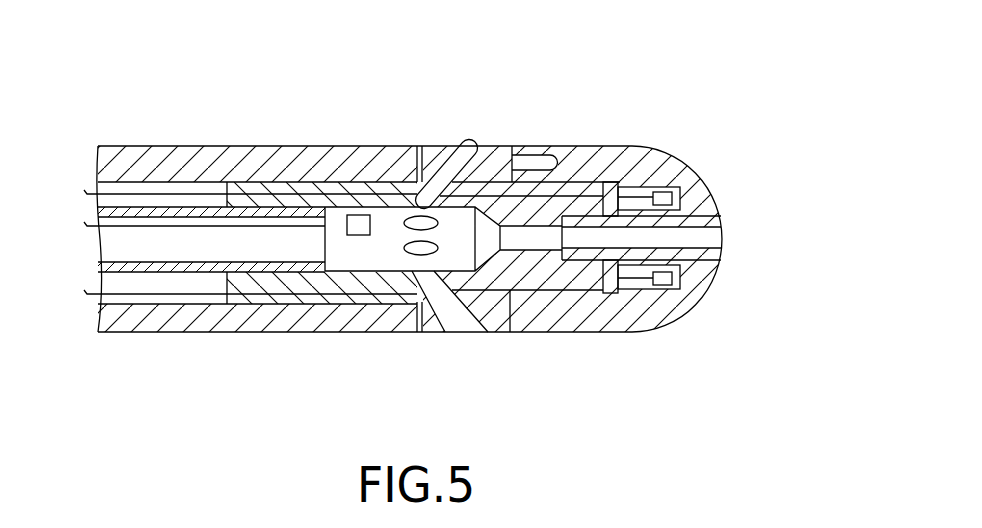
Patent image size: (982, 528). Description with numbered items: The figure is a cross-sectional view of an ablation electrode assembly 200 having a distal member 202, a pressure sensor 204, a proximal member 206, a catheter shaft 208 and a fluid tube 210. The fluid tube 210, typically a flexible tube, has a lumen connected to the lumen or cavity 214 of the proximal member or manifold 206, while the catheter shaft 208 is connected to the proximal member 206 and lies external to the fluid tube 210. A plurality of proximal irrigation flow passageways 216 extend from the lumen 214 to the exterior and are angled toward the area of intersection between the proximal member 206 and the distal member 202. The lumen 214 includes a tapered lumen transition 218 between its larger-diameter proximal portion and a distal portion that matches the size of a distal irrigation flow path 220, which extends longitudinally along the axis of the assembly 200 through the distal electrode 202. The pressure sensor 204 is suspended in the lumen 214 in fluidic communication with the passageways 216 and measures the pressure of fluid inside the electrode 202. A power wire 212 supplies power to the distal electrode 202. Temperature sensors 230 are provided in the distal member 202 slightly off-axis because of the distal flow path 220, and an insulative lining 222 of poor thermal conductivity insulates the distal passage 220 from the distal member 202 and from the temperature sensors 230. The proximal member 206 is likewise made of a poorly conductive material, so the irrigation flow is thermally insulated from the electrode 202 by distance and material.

The ablation electrode assembly 200 is at (598, 108).
The distal member 202 is at (703, 163).
The pressure sensor 204 is at (352, 220).
The proximal member 206 is at (438, 315).
The catheter shaft 208 is at (203, 318).
The fluid tube 210 is at (157, 240).
The power wire 212 is at (204, 183).
The lumen 214 is at (372, 253).
The proximal irrigation flow passageways 216 is at (467, 318).
The tapered lumen transition 218 is at (487, 240).
The distal irrigation flow path 220 is at (713, 235).
The insulative lining 222 is at (710, 258).
The temperature sensors 230 is at (663, 192).